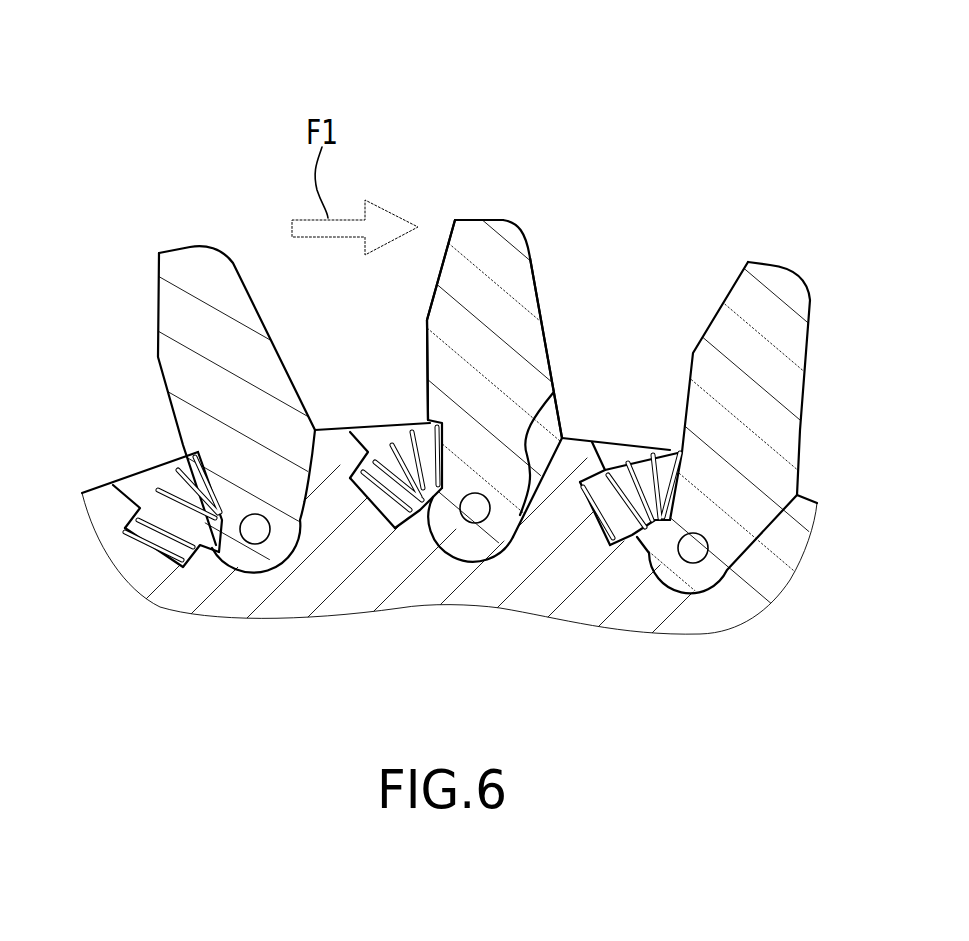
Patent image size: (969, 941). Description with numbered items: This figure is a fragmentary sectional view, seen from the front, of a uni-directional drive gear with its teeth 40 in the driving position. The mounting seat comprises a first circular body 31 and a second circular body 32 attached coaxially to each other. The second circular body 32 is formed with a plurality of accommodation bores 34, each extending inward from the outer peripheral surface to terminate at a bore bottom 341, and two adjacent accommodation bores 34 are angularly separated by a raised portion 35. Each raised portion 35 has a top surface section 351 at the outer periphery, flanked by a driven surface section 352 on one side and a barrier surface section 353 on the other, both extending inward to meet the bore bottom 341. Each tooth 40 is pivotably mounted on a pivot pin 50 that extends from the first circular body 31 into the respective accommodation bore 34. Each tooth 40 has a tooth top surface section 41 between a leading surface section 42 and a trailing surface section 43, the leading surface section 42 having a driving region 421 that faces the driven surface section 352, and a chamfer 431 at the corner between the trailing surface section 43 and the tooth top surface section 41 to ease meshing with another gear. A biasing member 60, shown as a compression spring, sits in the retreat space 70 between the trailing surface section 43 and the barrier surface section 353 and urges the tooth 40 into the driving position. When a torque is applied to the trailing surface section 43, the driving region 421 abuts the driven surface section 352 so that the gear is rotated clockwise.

The first circular body 31 is at (133, 476).
The second circular body 32 is at (91, 476).
The accommodation bore 34 is at (423, 512).
The bore bottom 341 is at (266, 574).
The raised portion 35 is at (327, 470).
The top surface section 351 is at (568, 436).
The driven surface section 352 is at (308, 497).
The barrier surface section 353 is at (347, 478).
The tooth 40 is at (169, 243).
The tooth top surface section 41 is at (498, 218).
The leading surface section 42 is at (537, 284).
The driving region 421 is at (553, 393).
The trailing surface section 43 is at (426, 345).
The chamfer 431 is at (438, 266).
The pivot pin 50 is at (255, 535).
The biasing member 60 is at (170, 467).
The retreat space 70 is at (368, 437).